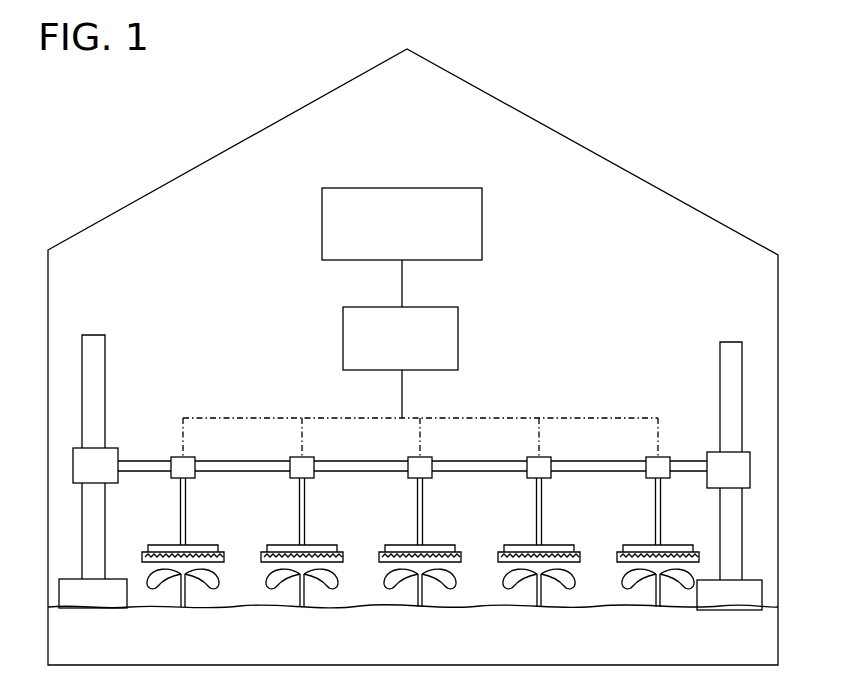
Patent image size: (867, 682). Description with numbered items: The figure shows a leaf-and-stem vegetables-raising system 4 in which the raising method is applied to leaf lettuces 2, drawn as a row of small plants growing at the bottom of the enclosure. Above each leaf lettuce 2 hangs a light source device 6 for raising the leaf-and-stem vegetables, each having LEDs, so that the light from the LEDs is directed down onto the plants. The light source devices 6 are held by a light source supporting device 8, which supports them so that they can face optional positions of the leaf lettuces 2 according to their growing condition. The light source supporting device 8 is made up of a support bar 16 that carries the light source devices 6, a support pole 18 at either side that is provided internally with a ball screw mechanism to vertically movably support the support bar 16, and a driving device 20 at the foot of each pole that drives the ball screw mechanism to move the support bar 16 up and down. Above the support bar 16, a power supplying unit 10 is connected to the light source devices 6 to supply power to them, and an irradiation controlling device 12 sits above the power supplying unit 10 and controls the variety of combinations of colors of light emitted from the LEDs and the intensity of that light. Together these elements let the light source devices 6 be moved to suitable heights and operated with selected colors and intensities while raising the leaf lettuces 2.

The leaf lettuce 2 is at (152, 574).
The leaf-and-stem vegetables-raising system 4 is at (165, 286).
The light source device for raising the leaf-and-stem vegetables 6 is at (290, 545).
The light source supporting device 8 is at (176, 342).
The power supplying unit 10 is at (447, 332).
The irradiation controlling device 12 is at (474, 230).
The support bar 16 is at (166, 457).
The support pole 18 is at (93, 367).
The driving device 20 is at (73, 579).